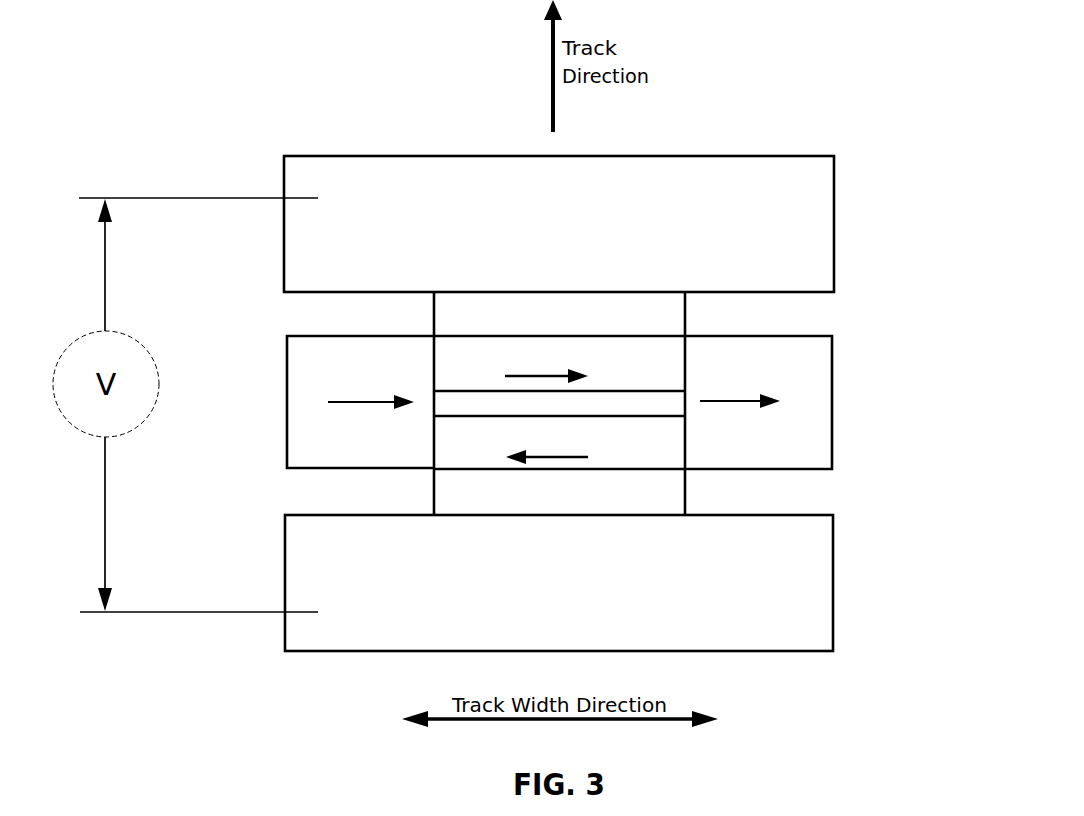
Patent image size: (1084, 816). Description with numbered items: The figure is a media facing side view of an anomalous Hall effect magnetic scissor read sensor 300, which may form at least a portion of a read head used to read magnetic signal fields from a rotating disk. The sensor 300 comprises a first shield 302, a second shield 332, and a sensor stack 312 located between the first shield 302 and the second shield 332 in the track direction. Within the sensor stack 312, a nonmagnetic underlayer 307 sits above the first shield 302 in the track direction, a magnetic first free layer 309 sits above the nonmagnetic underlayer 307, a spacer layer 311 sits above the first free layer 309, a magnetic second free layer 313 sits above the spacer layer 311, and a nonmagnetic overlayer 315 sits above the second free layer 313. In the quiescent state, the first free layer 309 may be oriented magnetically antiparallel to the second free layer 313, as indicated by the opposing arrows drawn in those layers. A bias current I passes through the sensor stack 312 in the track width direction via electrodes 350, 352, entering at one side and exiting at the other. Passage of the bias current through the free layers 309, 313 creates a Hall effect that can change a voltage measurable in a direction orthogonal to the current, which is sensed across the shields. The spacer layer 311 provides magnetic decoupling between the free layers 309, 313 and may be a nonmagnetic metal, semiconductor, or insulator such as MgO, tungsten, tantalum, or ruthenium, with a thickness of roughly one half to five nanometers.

The sensor 300 is at (320, 672).
The first shield 302 is at (758, 652).
The second shield 332 is at (785, 156).
The sensor stack 312 is at (667, 403).
The nonmagnetic underlayer 307 is at (628, 504).
The first free layer 309 is at (625, 449).
The spacer layer 311 is at (613, 414).
The second free layer 313 is at (615, 366).
The nonmagnetic overlayer 315 is at (663, 326).
The electrode 350 is at (287, 372).
The electrode 352 is at (813, 336).